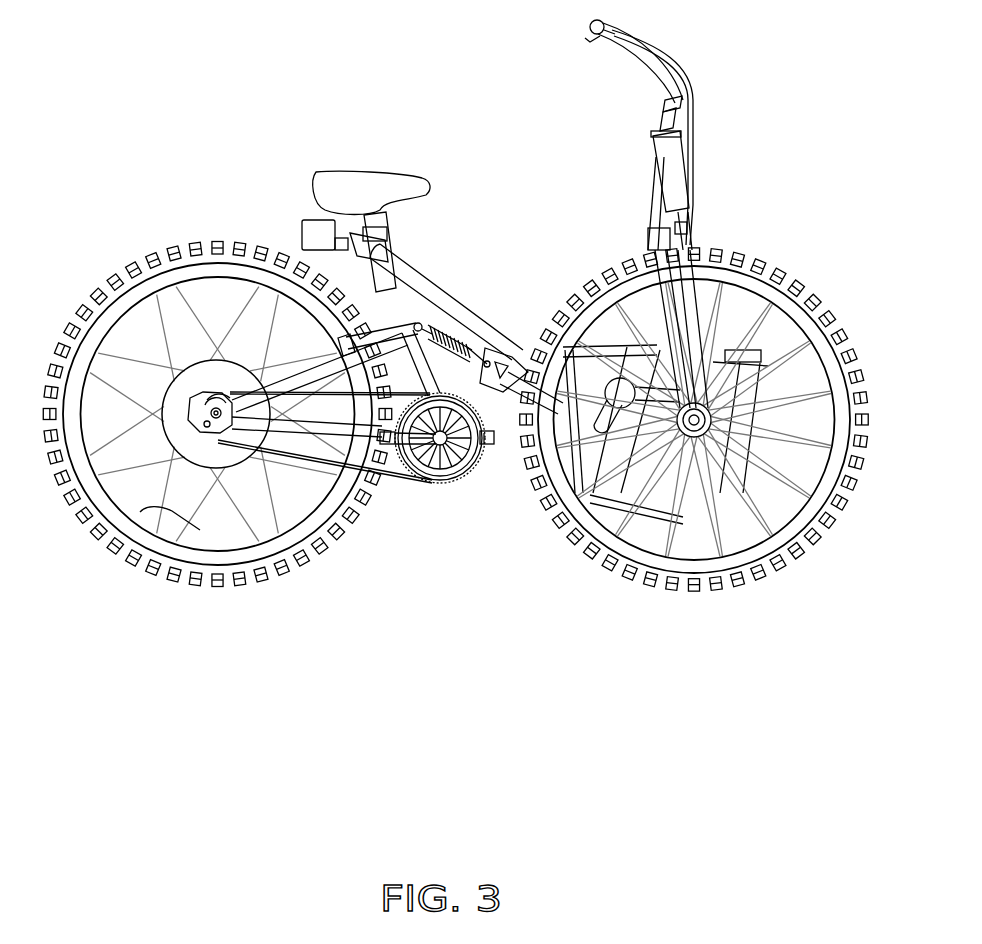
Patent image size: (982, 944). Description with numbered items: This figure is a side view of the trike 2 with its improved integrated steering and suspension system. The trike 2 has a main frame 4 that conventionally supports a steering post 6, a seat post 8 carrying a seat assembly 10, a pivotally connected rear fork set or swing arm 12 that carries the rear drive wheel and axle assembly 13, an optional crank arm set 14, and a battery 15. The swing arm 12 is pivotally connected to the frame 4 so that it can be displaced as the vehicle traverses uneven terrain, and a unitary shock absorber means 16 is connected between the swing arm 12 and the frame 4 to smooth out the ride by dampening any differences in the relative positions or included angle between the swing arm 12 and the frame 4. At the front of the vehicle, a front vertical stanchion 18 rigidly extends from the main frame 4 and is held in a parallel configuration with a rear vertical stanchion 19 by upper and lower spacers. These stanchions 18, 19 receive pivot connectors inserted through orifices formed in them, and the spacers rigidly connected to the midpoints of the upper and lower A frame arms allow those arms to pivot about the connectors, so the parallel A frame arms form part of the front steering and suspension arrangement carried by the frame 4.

The trike 2 is at (602, 716).
The main frame 4 is at (457, 290).
The steering post 6 is at (678, 177).
The seat post 8 is at (380, 245).
The seat assembly 10 is at (348, 182).
The rear fork set (swing arm) 12 is at (283, 375).
The rear drive wheel and axle assembly 13 is at (140, 512).
The crank arm set 14 is at (431, 500).
The battery 15 is at (305, 220).
The shock absorber means 16 is at (465, 337).
The front vertical stanchion 18 is at (650, 193).
The rear vertical stanchion 19 is at (568, 458).